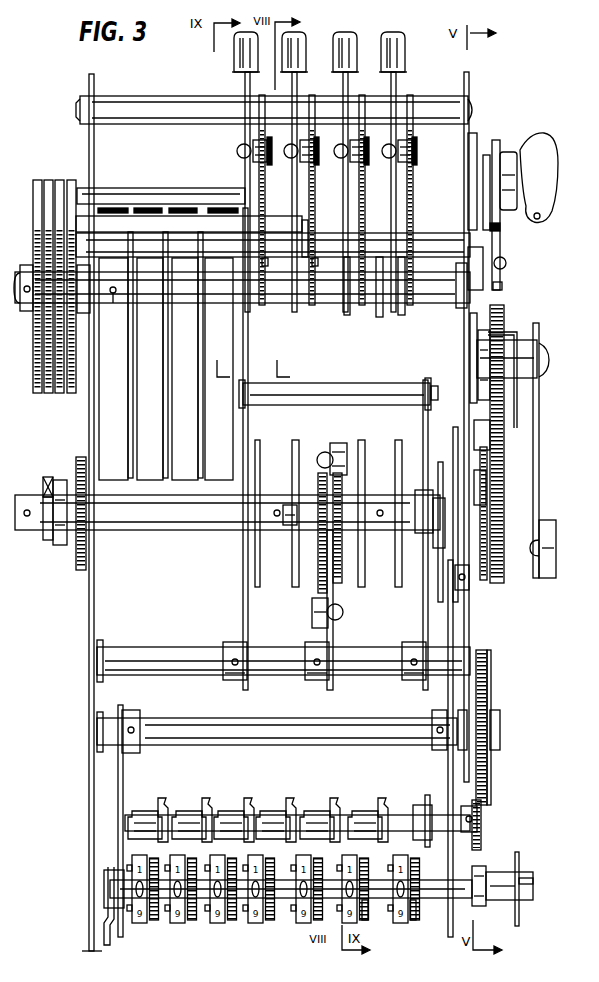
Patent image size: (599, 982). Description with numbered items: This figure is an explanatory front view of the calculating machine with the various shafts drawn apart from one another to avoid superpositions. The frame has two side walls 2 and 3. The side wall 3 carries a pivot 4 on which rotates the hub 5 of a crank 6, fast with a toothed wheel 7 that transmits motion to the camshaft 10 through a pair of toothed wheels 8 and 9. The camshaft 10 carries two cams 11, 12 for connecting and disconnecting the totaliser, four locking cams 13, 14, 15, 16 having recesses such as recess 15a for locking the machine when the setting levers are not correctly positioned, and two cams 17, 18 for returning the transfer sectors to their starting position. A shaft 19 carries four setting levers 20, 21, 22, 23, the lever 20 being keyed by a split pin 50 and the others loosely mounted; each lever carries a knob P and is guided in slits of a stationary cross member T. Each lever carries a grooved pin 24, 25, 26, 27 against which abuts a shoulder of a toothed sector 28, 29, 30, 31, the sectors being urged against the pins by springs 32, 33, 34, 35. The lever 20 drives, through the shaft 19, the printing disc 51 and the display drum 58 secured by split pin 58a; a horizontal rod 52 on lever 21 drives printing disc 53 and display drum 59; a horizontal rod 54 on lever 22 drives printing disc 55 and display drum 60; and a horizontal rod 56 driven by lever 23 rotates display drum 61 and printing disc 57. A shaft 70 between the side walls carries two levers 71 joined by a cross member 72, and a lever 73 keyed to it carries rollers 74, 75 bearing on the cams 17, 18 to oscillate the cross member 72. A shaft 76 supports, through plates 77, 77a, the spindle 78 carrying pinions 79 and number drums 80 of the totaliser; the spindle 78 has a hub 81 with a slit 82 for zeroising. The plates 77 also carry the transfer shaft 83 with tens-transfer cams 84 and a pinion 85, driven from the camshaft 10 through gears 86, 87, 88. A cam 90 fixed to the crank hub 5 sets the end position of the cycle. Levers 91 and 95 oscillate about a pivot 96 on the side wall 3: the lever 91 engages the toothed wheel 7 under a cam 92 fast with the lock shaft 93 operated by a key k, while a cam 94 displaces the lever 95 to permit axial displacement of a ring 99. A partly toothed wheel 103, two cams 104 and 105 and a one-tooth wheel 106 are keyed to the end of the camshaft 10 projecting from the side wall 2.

The side wall 2 is at (92, 617).
The side wall 3 is at (470, 617).
The pivot 4 is at (469, 342).
The hub 5 is at (526, 330).
The crank 6 is at (532, 452).
The toothed wheel 7 is at (502, 311).
The toothed wheel 8 is at (493, 444).
The toothed wheel 9 is at (498, 496).
The camshaft 10 is at (407, 490).
The cam 11 is at (455, 426).
The cam 12 is at (440, 461).
The cam 13 is at (398, 586).
The cam 14 is at (362, 588).
The cam 15 is at (296, 590).
The recess 15a is at (289, 560).
The cam 16 is at (257, 590).
The cam 17 is at (341, 578).
The cam 18 is at (322, 558).
The shaft 19 is at (436, 300).
The setting lever 20 is at (392, 207).
The setting lever 21 is at (342, 200).
The setting lever 22 is at (306, 178).
The setting lever 23 is at (248, 166).
The grooved pin 24 is at (418, 144).
The grooved pin 25 is at (368, 147).
The grooved pin 26 is at (318, 147).
The grooved pin 27 is at (270, 150).
The sector 28 is at (413, 201).
The sector 29 is at (365, 196).
The sector 30 is at (315, 191).
The sector 31 is at (266, 196).
The spring 32 is at (404, 264).
The spring 33 is at (360, 257).
The spring 34 is at (318, 263).
The spring 35 is at (268, 263).
The split pin 50 is at (382, 304).
The printing disc 51 is at (38, 395).
The horizontal rod 52 is at (297, 244).
The printing disc 53 is at (50, 395).
The horizontal rod 54 is at (207, 216).
The printing disc 55 is at (61, 395).
The horizontal rod 56 is at (125, 189).
The printing disc 57 is at (73, 395).
The display drum 58 is at (117, 470).
The split pin 58a is at (113, 308).
The display drum 59 is at (150, 470).
The display drum 60 is at (185, 470).
The display drum 61 is at (220, 470).
The shaft 70 is at (148, 655).
The lever 71 is at (242, 623).
The cross member 72 is at (321, 405).
The lever 73 is at (335, 630).
The roller 74 is at (314, 611).
The roller 75 is at (338, 455).
The shaft 76 is at (179, 742).
The plate 77 is at (452, 764).
The plate 77a is at (123, 767).
The spindle 78 is at (438, 898).
The pinion 79 is at (467, 585).
The number drum 80 is at (399, 817).
The hub 81 is at (498, 906).
The slit 82 is at (524, 883).
The transfer shaft 83 is at (402, 814).
The cam 84 is at (316, 813).
The pinion 85 is at (482, 832).
The gear 86 is at (488, 770).
The gear 87 is at (491, 794).
The gear 88 is at (490, 536).
The cam 90 is at (480, 378).
The lever 91 is at (500, 229).
The cam 92 is at (496, 140).
The movable shaft 93 is at (511, 152).
The cam 94 is at (486, 155).
The lever 95 is at (502, 286).
The pivot 96 is at (506, 263).
The ring 99 is at (519, 853).
The partly toothed wheel 103 is at (83, 572).
The cam 104 is at (68, 555).
The cam 105 is at (52, 543).
The one-tooth wheel 106 is at (47, 478).
The stationary cross member T is at (128, 106).
The knob P is at (250, 50).
The key k is at (531, 136).